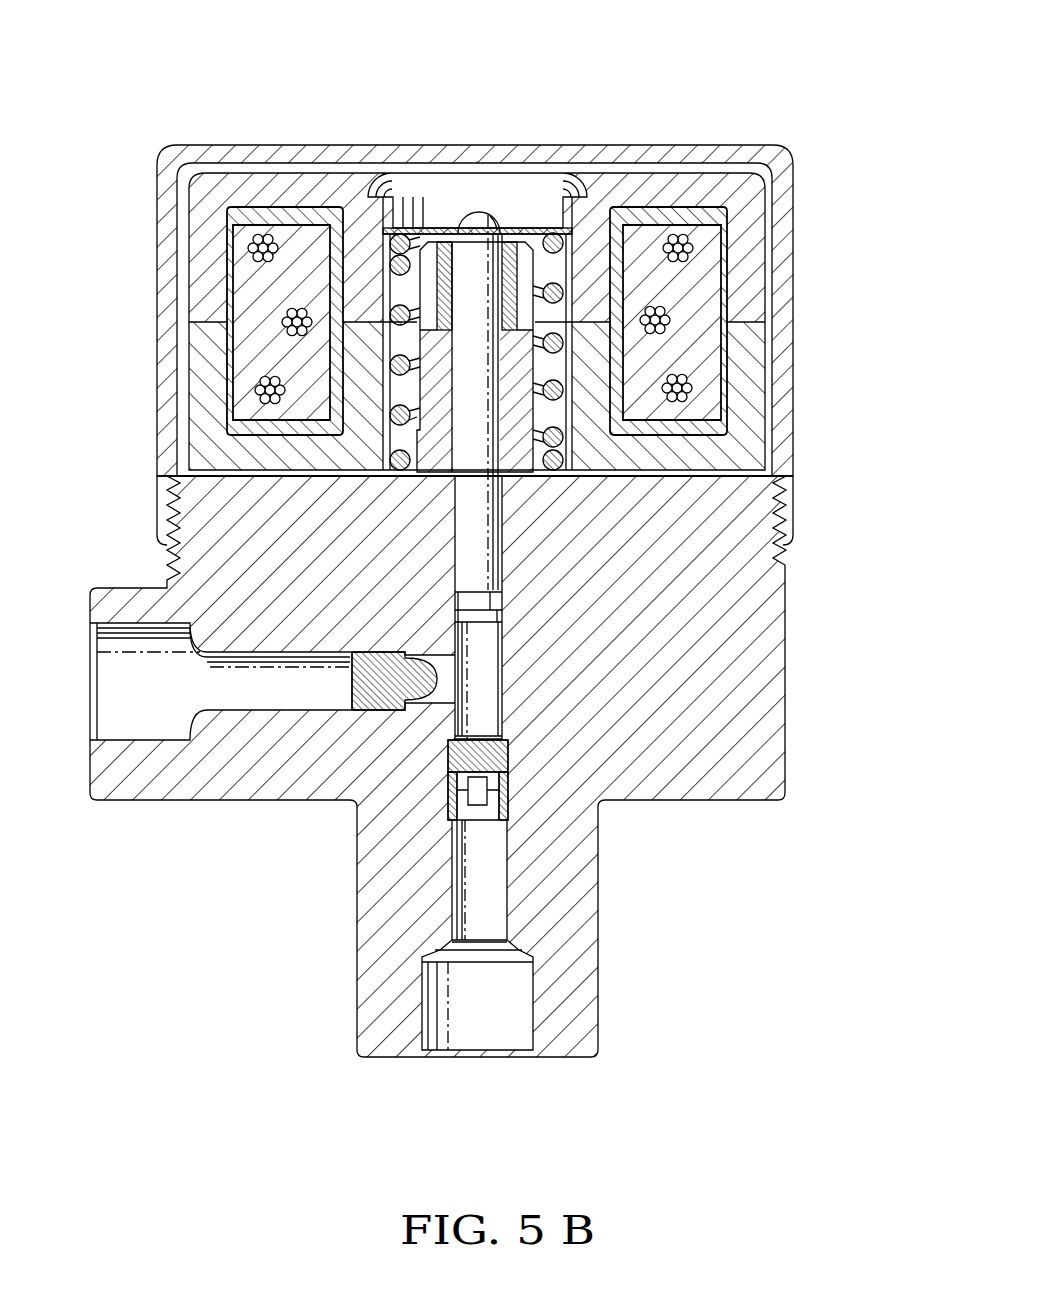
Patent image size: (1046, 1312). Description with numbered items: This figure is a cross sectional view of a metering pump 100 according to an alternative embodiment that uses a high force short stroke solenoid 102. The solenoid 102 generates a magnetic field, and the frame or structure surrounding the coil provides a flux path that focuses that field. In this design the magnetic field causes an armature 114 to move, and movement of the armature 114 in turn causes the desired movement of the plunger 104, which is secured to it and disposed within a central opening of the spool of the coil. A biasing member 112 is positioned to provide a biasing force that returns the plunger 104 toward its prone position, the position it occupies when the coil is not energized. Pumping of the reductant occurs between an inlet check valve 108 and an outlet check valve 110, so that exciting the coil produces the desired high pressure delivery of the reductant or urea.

The metering pump 100 is at (794, 90).
The solenoid 102 is at (253, 293).
The plunger 104 is at (467, 518).
The inlet check valve 108 is at (362, 678).
The outlet check valve 110 is at (478, 812).
The biasing member 112 is at (553, 228).
The armature 114 is at (510, 228).